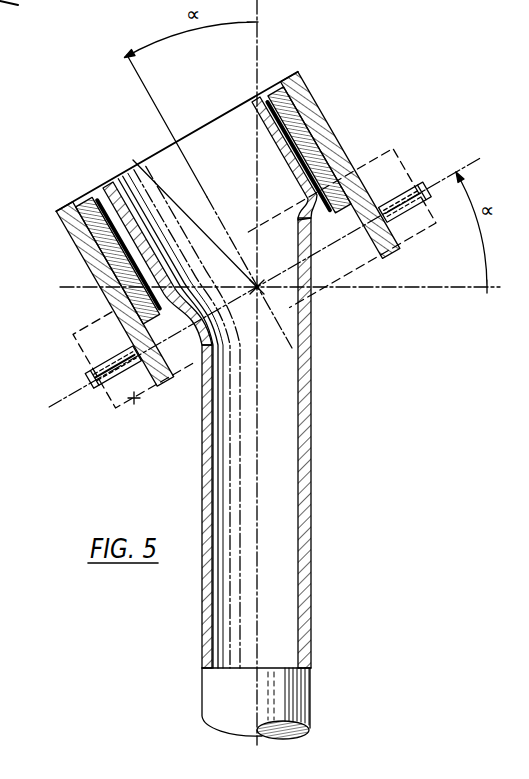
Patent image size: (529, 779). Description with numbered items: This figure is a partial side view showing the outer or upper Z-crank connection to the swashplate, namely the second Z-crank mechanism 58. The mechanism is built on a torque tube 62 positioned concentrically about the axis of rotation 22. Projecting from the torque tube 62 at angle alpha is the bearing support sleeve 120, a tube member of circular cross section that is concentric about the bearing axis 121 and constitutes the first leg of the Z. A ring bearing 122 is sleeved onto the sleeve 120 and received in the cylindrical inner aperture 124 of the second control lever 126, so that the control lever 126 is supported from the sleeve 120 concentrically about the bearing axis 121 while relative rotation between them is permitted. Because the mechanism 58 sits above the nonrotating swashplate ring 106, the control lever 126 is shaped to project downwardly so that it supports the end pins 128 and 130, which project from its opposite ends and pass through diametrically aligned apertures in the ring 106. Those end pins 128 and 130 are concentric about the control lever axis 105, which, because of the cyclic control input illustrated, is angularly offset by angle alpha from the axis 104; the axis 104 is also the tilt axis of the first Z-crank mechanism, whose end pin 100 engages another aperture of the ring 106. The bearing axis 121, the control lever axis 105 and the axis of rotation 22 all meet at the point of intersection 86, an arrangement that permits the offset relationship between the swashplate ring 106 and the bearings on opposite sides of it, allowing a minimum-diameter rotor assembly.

The end pin 100 is at (9, 19).
The control lever axis 104 is at (418, 287).
The control lever axis 105 is at (83, 398).
The nonrotating swashplate ring 106 is at (134, 400).
The bearing support sleeve 120 is at (133, 233).
The bearing axis 121 is at (152, 94).
The ring bearing 122 is at (96, 195).
The cylindrical inner aperture 124 is at (93, 242).
The second control lever 126 is at (100, 281).
The end pin 128 is at (103, 363).
The end pin 130 is at (408, 183).
The point of intersection 86 is at (257, 287).
The second Z-crank mechanism 58 is at (313, 368).
The axis of rotation 22 is at (258, 487).
The torque tube 62 is at (213, 690).